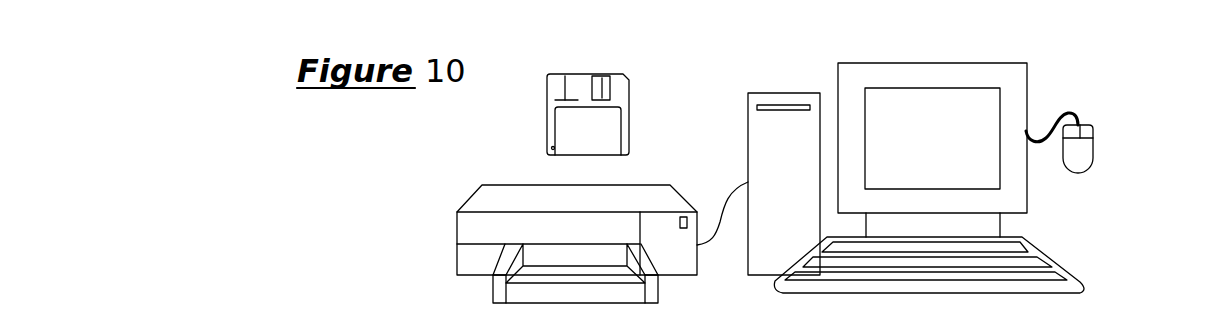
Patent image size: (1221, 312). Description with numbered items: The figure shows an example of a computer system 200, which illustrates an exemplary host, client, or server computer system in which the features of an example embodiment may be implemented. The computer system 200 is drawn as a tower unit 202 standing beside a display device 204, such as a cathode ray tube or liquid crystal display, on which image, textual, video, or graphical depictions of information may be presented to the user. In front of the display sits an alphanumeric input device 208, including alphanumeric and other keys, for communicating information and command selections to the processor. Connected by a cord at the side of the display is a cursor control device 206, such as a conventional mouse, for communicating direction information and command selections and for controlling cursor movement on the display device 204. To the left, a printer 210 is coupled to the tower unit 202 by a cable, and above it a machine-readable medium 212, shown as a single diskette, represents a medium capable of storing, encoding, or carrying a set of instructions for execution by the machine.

The computer system 200 is at (1036, 48).
The computer tower / processing unit 202 is at (784, 93).
The display device 204 is at (1026, 96).
The cursor control device 206 is at (1093, 150).
The alphanumeric input device 208 is at (1080, 268).
The printer 210 is at (458, 204).
The machine-readable medium 212 is at (547, 132).